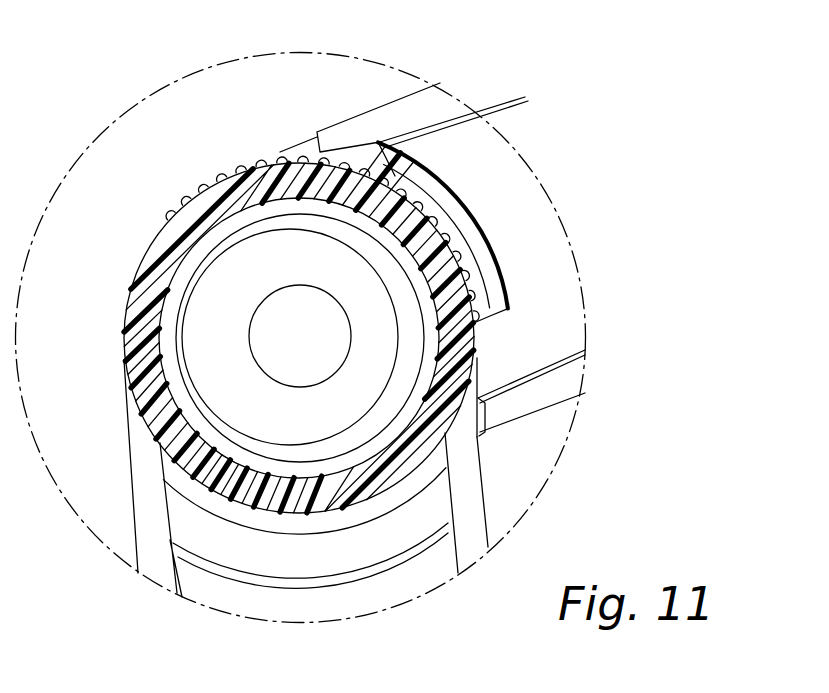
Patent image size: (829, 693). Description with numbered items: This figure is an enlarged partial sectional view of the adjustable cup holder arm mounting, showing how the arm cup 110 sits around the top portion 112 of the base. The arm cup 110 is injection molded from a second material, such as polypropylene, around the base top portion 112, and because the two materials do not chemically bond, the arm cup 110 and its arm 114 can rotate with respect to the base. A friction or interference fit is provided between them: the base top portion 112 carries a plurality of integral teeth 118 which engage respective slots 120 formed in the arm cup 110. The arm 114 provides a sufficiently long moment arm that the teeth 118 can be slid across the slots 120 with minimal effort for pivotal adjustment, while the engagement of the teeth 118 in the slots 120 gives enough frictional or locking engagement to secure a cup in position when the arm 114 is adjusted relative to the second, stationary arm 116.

The arm cup 110 is at (452, 190).
The top portion of the base 112 is at (478, 360).
The arm 114 is at (548, 390).
The second, stationary arm 116 is at (473, 512).
The teeth 118 is at (505, 313).
The slots 120 is at (497, 298).